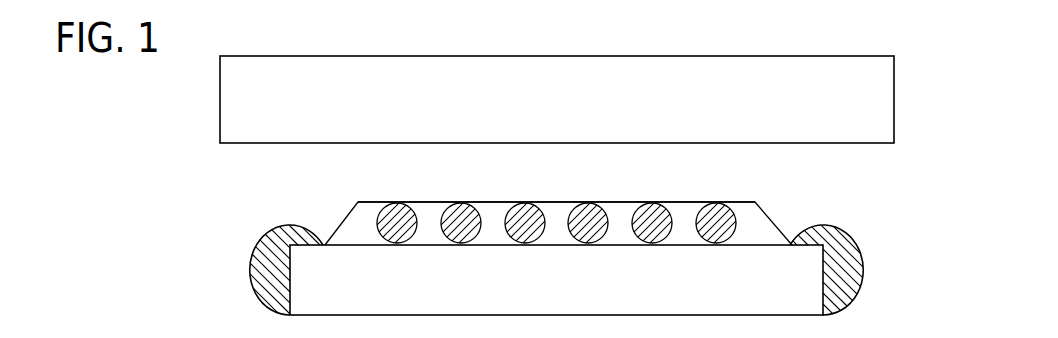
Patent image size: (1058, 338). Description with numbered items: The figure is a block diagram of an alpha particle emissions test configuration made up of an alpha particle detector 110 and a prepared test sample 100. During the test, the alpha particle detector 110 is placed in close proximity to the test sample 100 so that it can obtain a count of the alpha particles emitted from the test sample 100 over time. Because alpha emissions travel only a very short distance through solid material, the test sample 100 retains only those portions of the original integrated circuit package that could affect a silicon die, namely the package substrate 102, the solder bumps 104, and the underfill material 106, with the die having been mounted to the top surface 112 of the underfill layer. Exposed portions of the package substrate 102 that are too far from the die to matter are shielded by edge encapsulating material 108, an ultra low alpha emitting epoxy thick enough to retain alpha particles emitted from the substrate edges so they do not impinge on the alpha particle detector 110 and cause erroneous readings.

The test sample 100 is at (229, 198).
The package substrate 102 is at (573, 291).
The solder bumps 104 is at (463, 217).
The underfill material 106 is at (345, 217).
The edge encapsulating material 108 is at (251, 278).
The alpha particle detector 110 is at (573, 110).
The top surface 112 is at (624, 201).